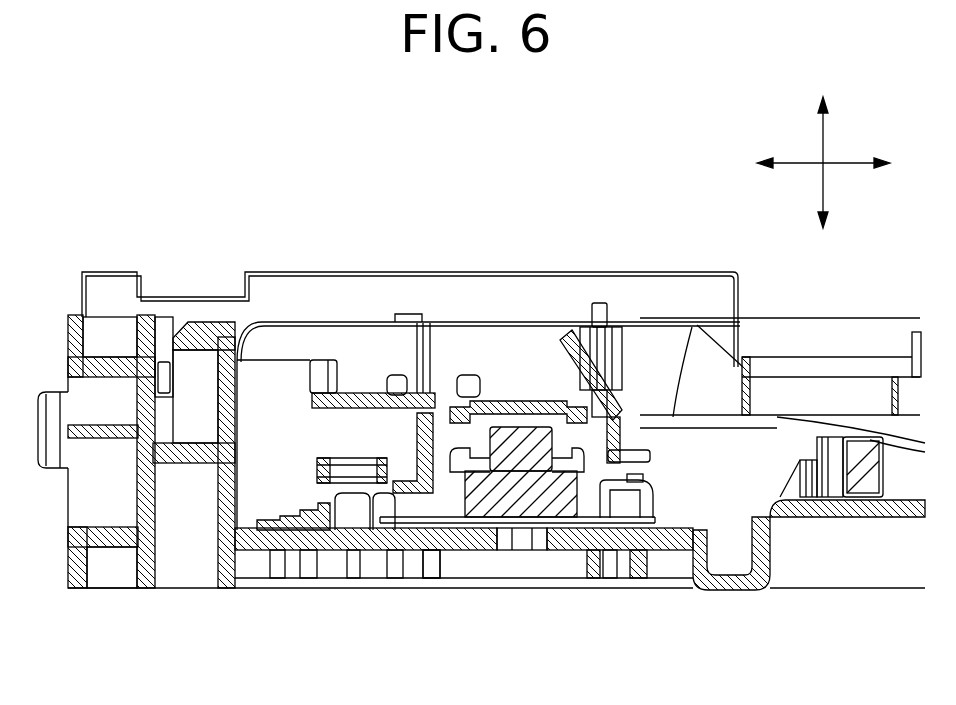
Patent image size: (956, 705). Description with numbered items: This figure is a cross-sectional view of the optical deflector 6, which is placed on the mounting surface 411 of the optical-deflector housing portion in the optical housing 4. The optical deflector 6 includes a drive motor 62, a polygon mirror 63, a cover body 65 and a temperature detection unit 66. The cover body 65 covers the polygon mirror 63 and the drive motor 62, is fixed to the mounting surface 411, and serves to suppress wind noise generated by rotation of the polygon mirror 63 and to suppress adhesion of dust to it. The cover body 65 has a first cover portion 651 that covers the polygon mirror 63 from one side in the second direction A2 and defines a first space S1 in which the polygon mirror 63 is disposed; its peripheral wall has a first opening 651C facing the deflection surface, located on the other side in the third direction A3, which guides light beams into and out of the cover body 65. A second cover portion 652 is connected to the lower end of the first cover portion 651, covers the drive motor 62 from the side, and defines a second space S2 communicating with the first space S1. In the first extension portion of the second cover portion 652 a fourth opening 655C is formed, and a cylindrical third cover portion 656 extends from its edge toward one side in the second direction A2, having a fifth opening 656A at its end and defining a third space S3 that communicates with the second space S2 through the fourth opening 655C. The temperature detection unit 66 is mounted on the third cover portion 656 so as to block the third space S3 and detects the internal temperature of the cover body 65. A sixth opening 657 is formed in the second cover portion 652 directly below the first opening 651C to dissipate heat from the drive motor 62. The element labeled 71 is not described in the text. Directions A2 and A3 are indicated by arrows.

The optical housing 4 is at (218, 513).
The mounting surface 411 is at (677, 543).
The optical deflector 6 is at (640, 463).
The drive motor 62 is at (530, 500).
The polygon mirror 63 is at (615, 437).
The cover body 65 is at (500, 437).
The first cover portion 651 is at (560, 343).
The first opening 651C is at (632, 452).
The second cover portion 652 is at (402, 490).
The fourth opening 655C is at (372, 497).
The third cover portion 656 is at (400, 483).
The fifth opening 656A is at (338, 468).
The sixth opening 657 is at (628, 498).
The temperature detection unit 66 is at (358, 470).
The terminal 71 is at (862, 478).
The first space S1 is at (450, 437).
The second space S2 is at (450, 500).
The third space S3 is at (322, 492).
The second direction A2 is at (826, 137).
The third direction A3 is at (842, 165).